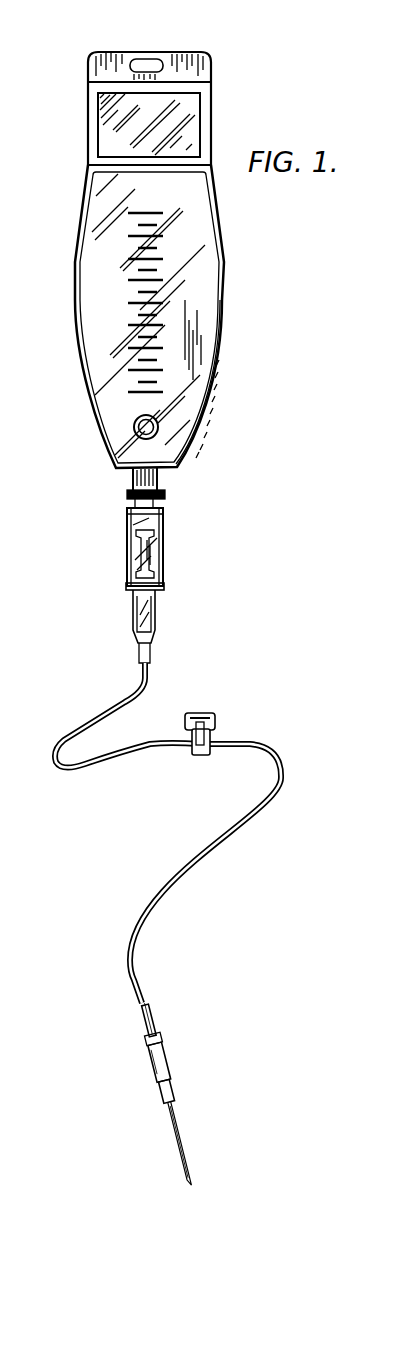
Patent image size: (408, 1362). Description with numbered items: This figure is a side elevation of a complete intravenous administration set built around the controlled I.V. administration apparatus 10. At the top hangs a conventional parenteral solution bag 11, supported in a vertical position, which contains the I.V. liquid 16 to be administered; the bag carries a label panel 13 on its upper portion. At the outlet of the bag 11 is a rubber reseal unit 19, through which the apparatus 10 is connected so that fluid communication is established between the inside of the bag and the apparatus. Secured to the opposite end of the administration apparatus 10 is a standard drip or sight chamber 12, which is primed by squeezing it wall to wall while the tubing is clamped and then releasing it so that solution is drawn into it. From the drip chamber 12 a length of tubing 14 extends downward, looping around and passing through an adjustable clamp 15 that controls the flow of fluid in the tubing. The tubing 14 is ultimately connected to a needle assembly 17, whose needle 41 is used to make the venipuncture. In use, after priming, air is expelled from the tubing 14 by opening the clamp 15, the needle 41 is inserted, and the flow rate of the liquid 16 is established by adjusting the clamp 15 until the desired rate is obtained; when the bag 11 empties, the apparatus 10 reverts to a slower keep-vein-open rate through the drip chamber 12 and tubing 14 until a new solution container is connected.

The controlled I.V. administration apparatus 10 is at (177, 552).
The parenteral solution bag 11 is at (210, 348).
The drip chamber 12 is at (139, 625).
The label panel 13 is at (98, 126).
The tubing 14 is at (258, 806).
The adjustable clamp 15 is at (215, 718).
The I.V. liquid 16 is at (187, 403).
The needle assembly 17 is at (170, 1066).
The rubber reseal unit 19 is at (148, 484).
The needle 41 is at (183, 1172).